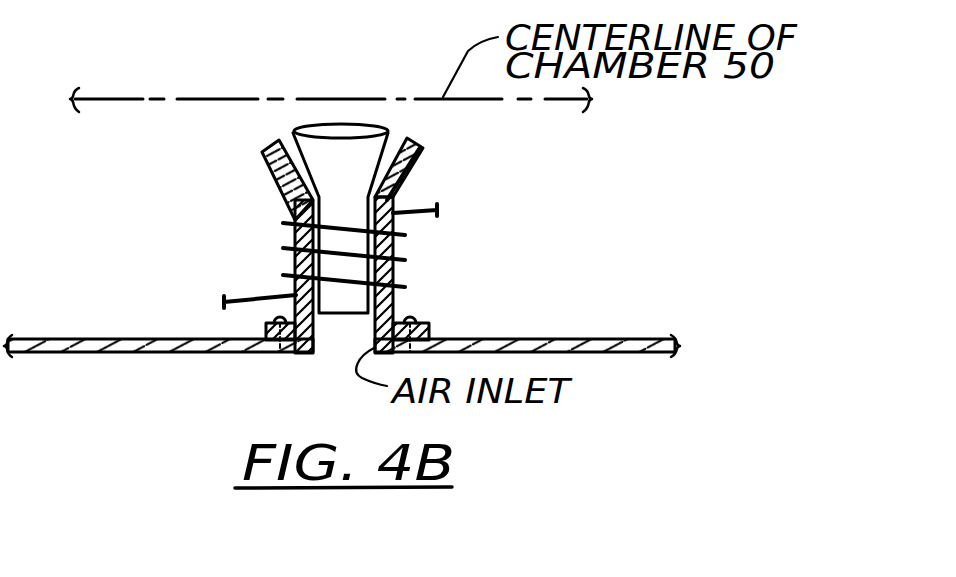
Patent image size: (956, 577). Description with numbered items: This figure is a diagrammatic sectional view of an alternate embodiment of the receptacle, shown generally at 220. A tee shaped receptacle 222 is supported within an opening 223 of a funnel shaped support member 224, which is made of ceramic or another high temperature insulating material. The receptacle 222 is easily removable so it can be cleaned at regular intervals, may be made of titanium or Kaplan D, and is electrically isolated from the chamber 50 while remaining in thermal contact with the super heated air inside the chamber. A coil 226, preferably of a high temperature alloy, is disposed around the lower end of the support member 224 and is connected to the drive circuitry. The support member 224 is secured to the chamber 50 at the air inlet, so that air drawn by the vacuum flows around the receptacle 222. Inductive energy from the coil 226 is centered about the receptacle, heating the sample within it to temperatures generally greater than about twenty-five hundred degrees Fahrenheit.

The receptacle 220 is at (534, 208).
The tee shaped receptacle 222 is at (292, 140).
The funnel shaped support member 224 is at (418, 158).
The coil 226 is at (389, 238).
The opening 223 is at (315, 332).
The chamber 50 is at (618, 352).